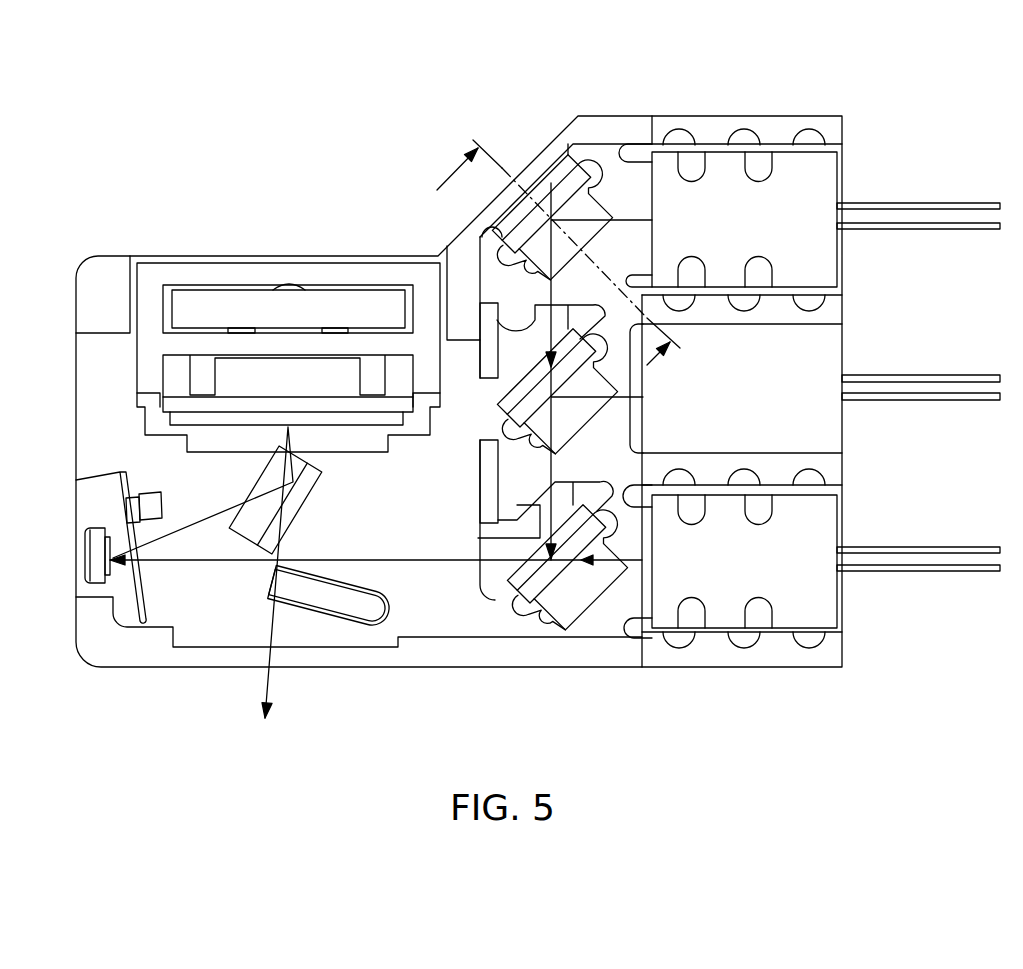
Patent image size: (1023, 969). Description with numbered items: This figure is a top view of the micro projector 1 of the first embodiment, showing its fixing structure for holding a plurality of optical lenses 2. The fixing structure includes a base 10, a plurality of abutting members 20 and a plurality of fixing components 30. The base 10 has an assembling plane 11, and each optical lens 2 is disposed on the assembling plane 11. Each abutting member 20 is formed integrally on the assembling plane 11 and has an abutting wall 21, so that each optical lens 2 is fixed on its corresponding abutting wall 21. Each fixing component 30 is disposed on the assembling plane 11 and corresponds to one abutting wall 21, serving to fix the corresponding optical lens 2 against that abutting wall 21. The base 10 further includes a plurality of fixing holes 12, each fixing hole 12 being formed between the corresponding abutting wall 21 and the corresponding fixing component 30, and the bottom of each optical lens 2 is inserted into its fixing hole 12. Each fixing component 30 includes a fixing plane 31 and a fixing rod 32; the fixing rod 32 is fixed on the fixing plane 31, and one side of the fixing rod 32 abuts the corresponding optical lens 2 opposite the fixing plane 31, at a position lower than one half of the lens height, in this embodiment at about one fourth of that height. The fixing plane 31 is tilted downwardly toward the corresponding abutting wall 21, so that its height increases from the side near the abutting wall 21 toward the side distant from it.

The micro projector 1 is at (253, 180).
The optical lens 2 is at (562, 193).
The base 10 is at (418, 652).
The assembling plane 11 is at (417, 580).
The fixing hole 12 is at (590, 165).
The abutting member 20 is at (557, 190).
The abutting wall 21 is at (523, 237).
The fixing component 30 is at (602, 397).
The fixing plane 31 is at (597, 242).
The fixing rod 32 is at (573, 400).